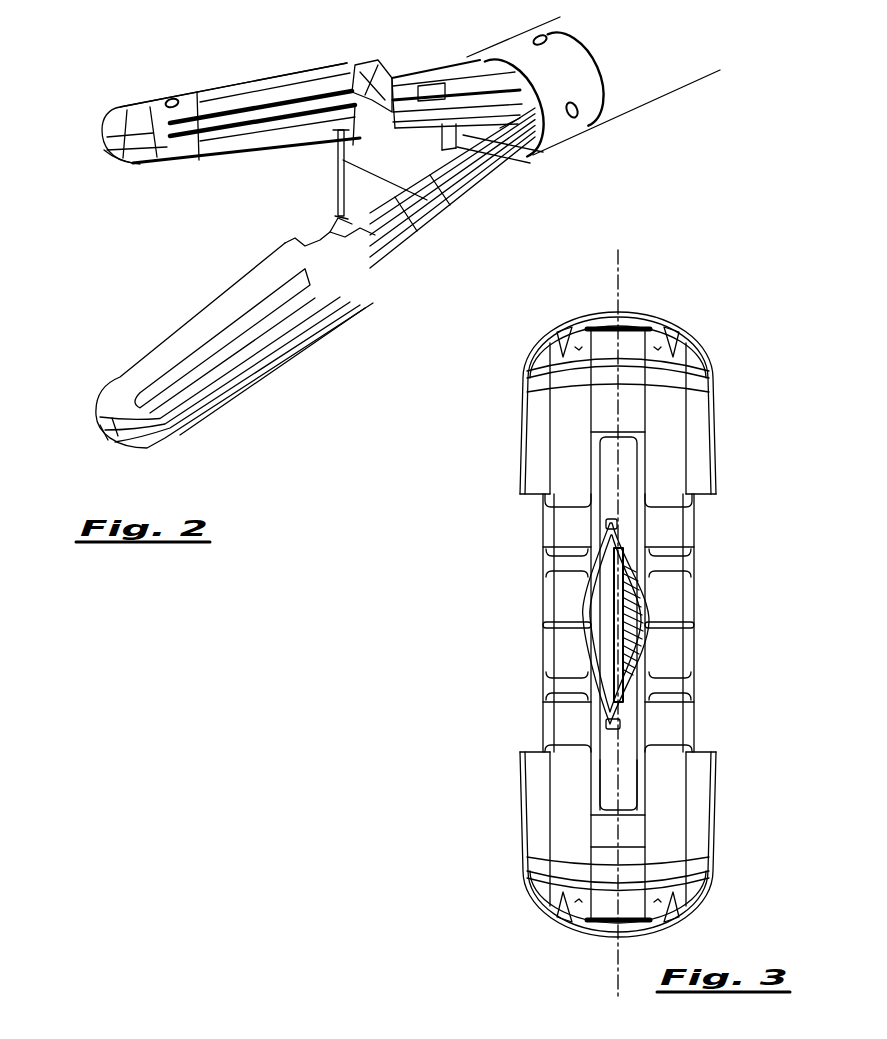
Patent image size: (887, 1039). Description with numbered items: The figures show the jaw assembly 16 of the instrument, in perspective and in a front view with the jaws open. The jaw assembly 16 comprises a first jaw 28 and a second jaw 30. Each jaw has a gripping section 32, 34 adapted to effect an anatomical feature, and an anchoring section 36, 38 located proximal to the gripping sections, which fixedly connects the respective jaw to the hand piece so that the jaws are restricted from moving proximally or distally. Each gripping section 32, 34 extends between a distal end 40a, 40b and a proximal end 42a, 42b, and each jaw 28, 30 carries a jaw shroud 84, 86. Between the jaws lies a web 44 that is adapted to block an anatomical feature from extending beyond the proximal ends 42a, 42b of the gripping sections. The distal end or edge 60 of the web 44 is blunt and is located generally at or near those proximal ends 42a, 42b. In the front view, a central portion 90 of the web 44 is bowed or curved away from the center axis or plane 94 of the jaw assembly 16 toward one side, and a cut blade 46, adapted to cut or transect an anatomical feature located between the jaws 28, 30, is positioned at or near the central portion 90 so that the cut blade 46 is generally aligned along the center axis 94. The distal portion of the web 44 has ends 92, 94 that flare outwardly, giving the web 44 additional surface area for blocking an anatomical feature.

In FIG. 2, the jaw assembly 16 is at (165, 45).
In FIG. 3, the jaw assembly 16 is at (742, 357).
In FIG. 2, the first jaw 28 is at (235, 80).
In FIG. 3, the first jaw 28 is at (706, 437).
In FIG. 2, the second jaw 30 is at (243, 392).
In FIG. 3, the second jaw 30 is at (705, 790).
In FIG. 2, the gripping section 32 is at (200, 165).
In FIG. 3, the gripping section 32 is at (566, 443).
In FIG. 2, the gripping section 34 is at (143, 360).
In FIG. 3, the gripping section 34 is at (565, 788).
In FIG. 2, the anchoring section 36 is at (435, 67).
In FIG. 3, the anchoring section 36 is at (700, 558).
In FIG. 2, the anchoring section 38 is at (477, 207).
In FIG. 3, the anchoring section 38 is at (700, 681).
In FIG. 2, the distal end 40a is at (133, 163).
In FIG. 3, the distal end 40a is at (563, 393).
In FIG. 2, the distal end 40b is at (117, 402).
In FIG. 3, the distal end 40b is at (620, 853).
In FIG. 2, the proximal end 42a is at (362, 140).
In FIG. 3, the proximal end 42a is at (568, 498).
In FIG. 2, the proximal end 42b is at (300, 252).
In FIG. 3, the proximal end 42b is at (563, 743).
In FIG. 2, the web 44 is at (365, 170).
In FIG. 3, the web 44 is at (585, 658).
In FIG. 2, the cut blade 46 is at (473, 133).
In FIG. 3, the cut blade 46 is at (648, 603).
In FIG. 2, the distal end or edge of the web 60 is at (340, 200).
In FIG. 2, the jaw shroud 84 is at (217, 90).
In FIG. 3, the jaw shroud 84 is at (633, 323).
In FIG. 2, the jaw shroud 86 is at (257, 372).
In FIG. 3, the jaw shroud 86 is at (548, 885).
In FIG. 3, the central portion of the web 90 is at (648, 623).
In FIG. 3, the flared end 92 is at (617, 528).
In FIG. 3, the center axis 94 is at (612, 727).